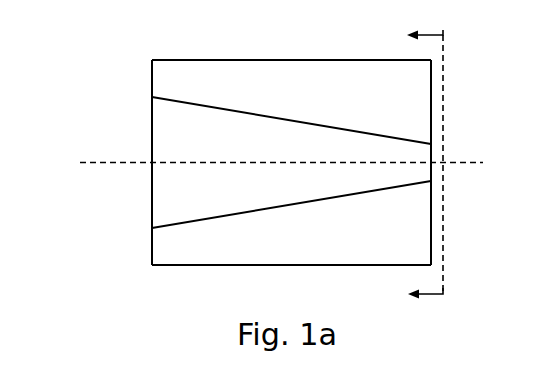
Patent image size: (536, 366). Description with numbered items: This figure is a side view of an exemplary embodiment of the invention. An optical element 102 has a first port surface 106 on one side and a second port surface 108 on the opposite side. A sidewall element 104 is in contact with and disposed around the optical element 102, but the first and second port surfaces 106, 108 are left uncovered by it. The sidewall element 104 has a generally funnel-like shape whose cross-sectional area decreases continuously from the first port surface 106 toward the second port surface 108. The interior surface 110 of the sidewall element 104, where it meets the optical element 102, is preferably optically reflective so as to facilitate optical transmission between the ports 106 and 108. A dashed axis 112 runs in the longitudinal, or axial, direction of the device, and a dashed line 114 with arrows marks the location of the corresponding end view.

The optical element 102 is at (205, 146).
The sidewall element 104 is at (408, 107).
The first port surface 106 is at (152, 113).
The second port surface 108 is at (431, 153).
The interior surface 110 is at (273, 117).
The axis 112 is at (110, 165).
The line 114 is at (432, 294).